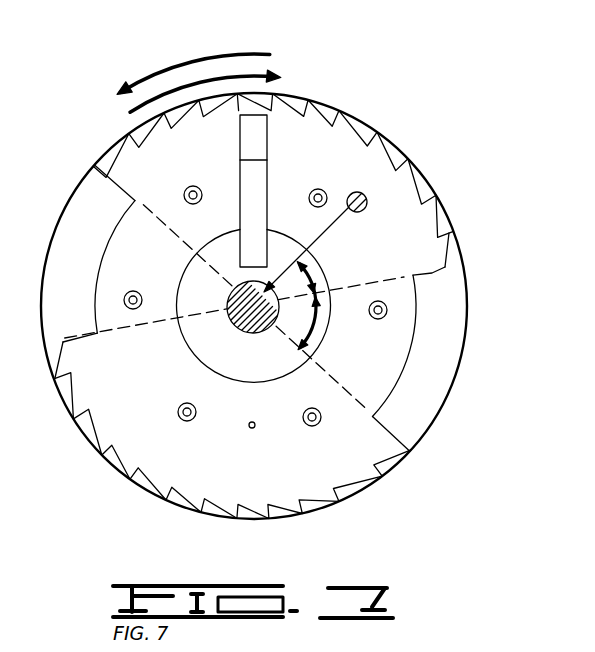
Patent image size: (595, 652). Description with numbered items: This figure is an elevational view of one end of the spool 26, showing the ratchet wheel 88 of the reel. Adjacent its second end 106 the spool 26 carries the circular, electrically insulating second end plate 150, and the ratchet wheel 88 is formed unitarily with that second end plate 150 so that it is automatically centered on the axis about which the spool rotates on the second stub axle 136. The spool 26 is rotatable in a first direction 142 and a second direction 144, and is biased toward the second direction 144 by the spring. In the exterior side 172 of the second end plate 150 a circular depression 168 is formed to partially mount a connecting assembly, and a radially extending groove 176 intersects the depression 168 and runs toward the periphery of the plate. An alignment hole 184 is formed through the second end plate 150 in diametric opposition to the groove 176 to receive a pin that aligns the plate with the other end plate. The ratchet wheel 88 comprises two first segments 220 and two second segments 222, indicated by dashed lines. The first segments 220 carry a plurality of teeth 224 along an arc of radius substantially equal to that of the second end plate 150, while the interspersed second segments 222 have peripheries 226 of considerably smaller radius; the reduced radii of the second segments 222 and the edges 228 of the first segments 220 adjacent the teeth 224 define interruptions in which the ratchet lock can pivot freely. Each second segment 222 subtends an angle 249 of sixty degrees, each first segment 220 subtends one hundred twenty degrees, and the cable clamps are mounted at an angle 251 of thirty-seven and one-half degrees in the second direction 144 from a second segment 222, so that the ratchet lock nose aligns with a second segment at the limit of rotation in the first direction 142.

The spool 26 is at (324, 82).
The ratchet wheel 88 is at (113, 468).
The second end 106 is at (93, 192).
The second stub axle 136 is at (304, 243).
The first direction 142 is at (223, 76).
The second direction 144 is at (174, 67).
The second end plate 150 is at (342, 143).
The circular depression 168 is at (306, 352).
The exterior side 172 is at (218, 470).
The groove 176 is at (260, 190).
The alignment hole 184 is at (252, 428).
The first segment 220 is at (415, 168).
The second segment 222 is at (103, 237).
The teeth 224 is at (378, 146).
The periphery 226 is at (95, 282).
The edge 228 is at (97, 163).
The angle 249 is at (313, 327).
The angle 251 is at (308, 272).